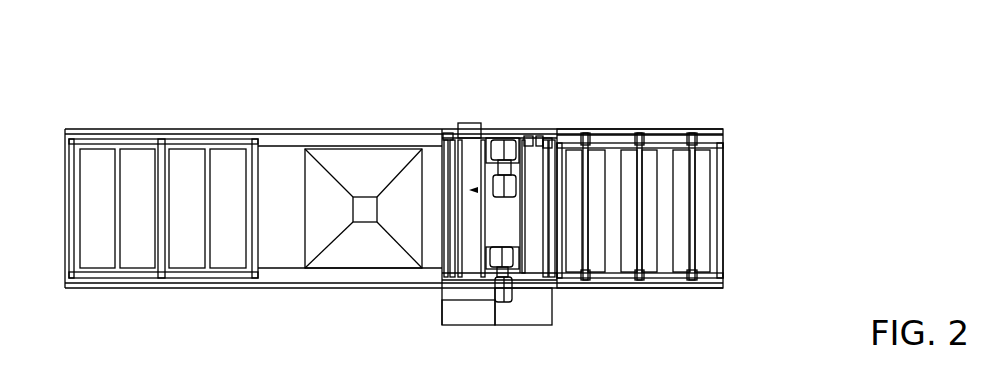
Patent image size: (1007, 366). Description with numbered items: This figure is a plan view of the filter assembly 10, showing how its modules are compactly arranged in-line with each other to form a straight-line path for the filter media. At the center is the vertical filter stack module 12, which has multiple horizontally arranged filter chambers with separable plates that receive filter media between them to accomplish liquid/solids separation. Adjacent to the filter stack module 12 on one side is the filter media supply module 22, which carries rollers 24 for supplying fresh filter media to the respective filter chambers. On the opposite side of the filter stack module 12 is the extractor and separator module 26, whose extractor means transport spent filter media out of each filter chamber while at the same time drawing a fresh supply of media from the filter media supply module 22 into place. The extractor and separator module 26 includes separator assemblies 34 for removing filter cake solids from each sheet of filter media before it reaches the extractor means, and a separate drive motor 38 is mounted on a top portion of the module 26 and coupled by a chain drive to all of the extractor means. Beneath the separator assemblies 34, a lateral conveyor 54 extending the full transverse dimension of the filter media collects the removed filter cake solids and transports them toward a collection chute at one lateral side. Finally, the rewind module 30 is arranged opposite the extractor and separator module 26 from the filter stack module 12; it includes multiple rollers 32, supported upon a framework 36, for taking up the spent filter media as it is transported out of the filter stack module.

The filter assembly 10 is at (513, 35).
The vertical filter stack module 12 is at (366, 117).
The filter media supply module 22 is at (165, 120).
The rollers 24 is at (97, 258).
The extractor and separator module 26 is at (532, 115).
The rewind module 30 is at (642, 115).
The rollers 32 is at (598, 268).
The separator assemblies 34 is at (453, 128).
The framework 36 is at (723, 218).
The drive motor 38 is at (507, 140).
The lateral conveyor 54 is at (468, 123).